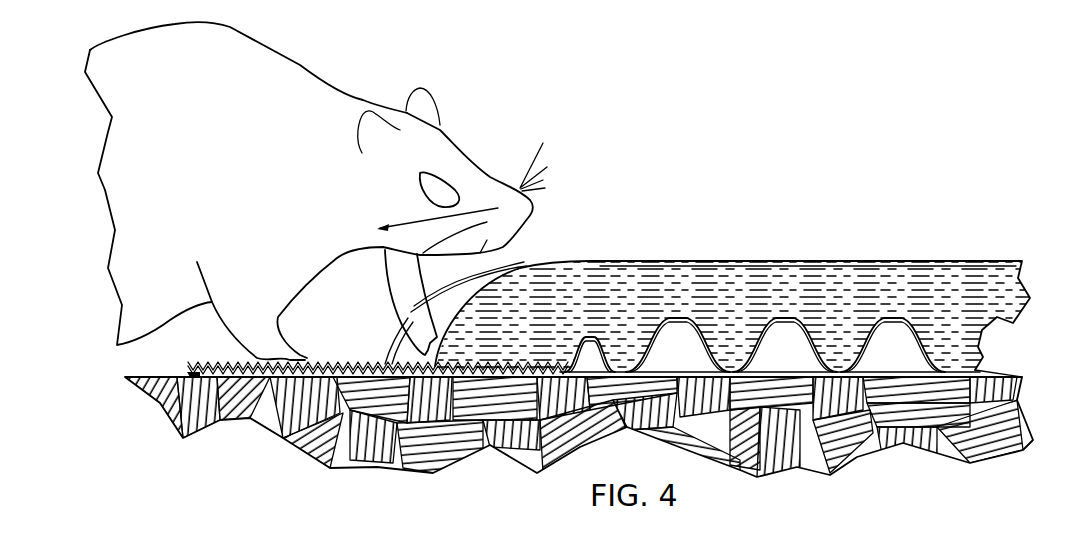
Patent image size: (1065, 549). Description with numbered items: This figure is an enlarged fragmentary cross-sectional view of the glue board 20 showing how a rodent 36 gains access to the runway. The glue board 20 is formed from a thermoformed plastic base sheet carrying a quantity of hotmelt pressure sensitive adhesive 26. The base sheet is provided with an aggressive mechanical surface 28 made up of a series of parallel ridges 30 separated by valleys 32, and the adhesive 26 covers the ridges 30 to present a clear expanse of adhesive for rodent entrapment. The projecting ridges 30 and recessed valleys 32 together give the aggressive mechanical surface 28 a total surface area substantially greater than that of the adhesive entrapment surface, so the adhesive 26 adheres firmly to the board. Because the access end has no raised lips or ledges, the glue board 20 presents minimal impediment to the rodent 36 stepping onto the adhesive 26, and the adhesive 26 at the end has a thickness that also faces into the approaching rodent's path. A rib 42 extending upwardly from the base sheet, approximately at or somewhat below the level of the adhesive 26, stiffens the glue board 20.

The glue board 20 is at (694, 203).
The adhesive 26 is at (955, 275).
The aggressive mechanical surface 28 is at (698, 350).
The ridges 30 is at (797, 330).
The valleys 32 is at (833, 372).
The rodent 36 is at (303, 60).
The ribs 42 is at (525, 256).